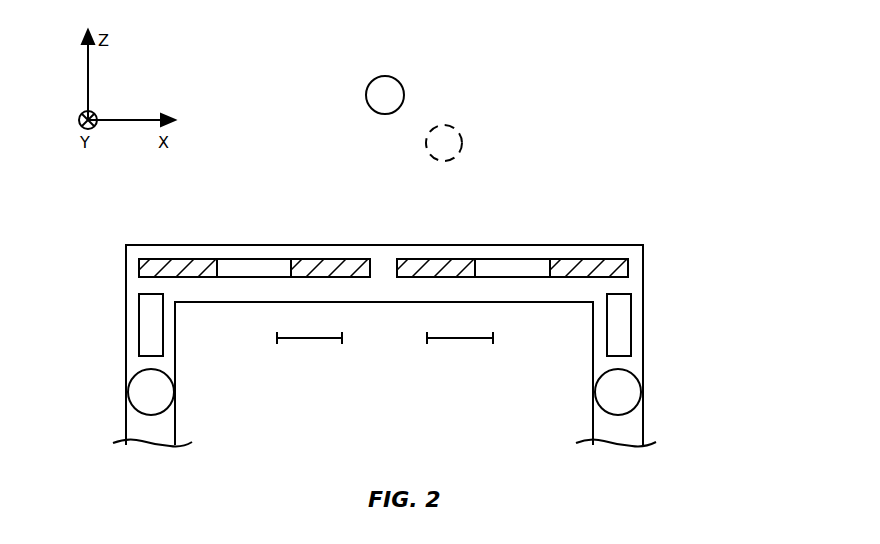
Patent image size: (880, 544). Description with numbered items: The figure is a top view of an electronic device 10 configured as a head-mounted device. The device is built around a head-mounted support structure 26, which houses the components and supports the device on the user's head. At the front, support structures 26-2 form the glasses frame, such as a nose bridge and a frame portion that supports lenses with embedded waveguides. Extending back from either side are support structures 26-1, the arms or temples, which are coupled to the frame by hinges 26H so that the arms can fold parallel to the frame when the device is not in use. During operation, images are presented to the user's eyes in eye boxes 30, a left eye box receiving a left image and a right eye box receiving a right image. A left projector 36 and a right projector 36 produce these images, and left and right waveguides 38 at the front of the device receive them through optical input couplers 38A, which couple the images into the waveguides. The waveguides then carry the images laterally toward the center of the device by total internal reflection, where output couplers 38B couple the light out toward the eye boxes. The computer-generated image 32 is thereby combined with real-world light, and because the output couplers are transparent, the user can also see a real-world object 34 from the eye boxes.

The electronic device 10 is at (663, 197).
The head-mounted support structure 26 is at (743, 245).
The support structures 26-1 is at (135, 429).
The support structures 26-2 is at (135, 256).
The hinges 26H is at (138, 396).
The eye boxes 30 is at (425, 338).
The computer-generated image 32 is at (462, 141).
The object 34 is at (404, 95).
The projector 36 is at (138, 331).
The waveguide 38 is at (252, 264).
The optical input couplers 38A is at (190, 264).
The output couplers 38B is at (322, 264).